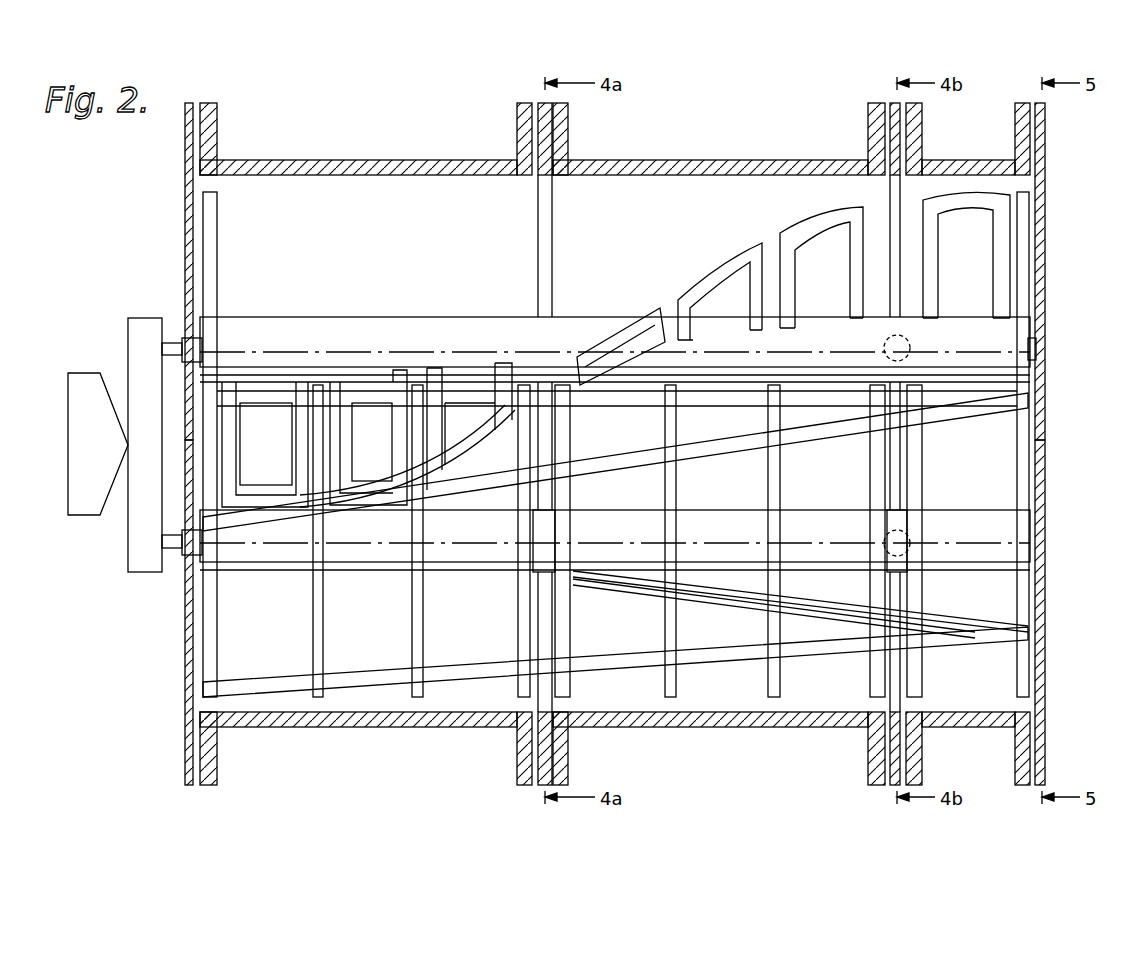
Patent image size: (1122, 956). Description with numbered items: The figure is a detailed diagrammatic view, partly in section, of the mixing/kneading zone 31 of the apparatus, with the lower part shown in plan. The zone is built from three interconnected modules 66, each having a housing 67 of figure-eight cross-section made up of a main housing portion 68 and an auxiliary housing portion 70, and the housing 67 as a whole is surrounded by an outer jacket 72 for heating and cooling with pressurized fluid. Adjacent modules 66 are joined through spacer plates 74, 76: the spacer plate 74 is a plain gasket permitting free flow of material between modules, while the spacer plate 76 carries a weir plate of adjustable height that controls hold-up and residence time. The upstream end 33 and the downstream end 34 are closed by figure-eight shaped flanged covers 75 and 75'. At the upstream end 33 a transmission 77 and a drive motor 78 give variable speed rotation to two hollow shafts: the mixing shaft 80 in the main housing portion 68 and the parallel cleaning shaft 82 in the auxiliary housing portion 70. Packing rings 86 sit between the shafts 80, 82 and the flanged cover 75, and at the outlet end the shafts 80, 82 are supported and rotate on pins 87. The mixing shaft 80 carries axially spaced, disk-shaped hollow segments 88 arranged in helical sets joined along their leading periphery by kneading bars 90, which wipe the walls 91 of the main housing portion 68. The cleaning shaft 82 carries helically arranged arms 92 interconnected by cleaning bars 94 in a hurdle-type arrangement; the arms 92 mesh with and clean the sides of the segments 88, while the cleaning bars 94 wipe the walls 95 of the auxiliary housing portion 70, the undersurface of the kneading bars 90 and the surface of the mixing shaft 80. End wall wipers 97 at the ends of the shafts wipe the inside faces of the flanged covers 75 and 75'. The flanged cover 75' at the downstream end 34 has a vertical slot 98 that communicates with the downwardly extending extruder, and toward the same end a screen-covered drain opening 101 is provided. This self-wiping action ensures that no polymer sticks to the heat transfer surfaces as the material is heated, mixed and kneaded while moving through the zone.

The mixing/kneading zone 31 is at (490, 695).
The upstream end 33 is at (182, 160).
The downstream end 34 is at (1050, 235).
The module 66 is at (358, 733).
The housing 67 is at (325, 160).
The main housing portion 68 is at (268, 665).
The auxiliary housing portion 70 is at (607, 169).
The outer jacket 72 is at (432, 728).
The spacer plate 74 is at (538, 230).
The flanged cover 75 is at (169, 612).
The flanged cover 75' is at (1062, 444).
The spacer plate 76 is at (878, 193).
The transmission 77 is at (140, 318).
The drive motor 78 is at (98, 373).
The mixing shaft 80 is at (392, 575).
The cleaning shaft 82 is at (345, 317).
The packing rings 86 is at (181, 335).
The pins 87 is at (1040, 347).
The disk-shaped hollow segments 88 is at (313, 600).
The kneading bars 90 is at (365, 675).
The walls 91 is at (655, 178).
The arms 92 is at (300, 415).
The cleaning bars 94 is at (262, 485).
The walls 95 is at (462, 176).
The end wall wipers 97 is at (218, 215).
The vertical slot 98 is at (1047, 460).
The drain opening 101 is at (905, 345).